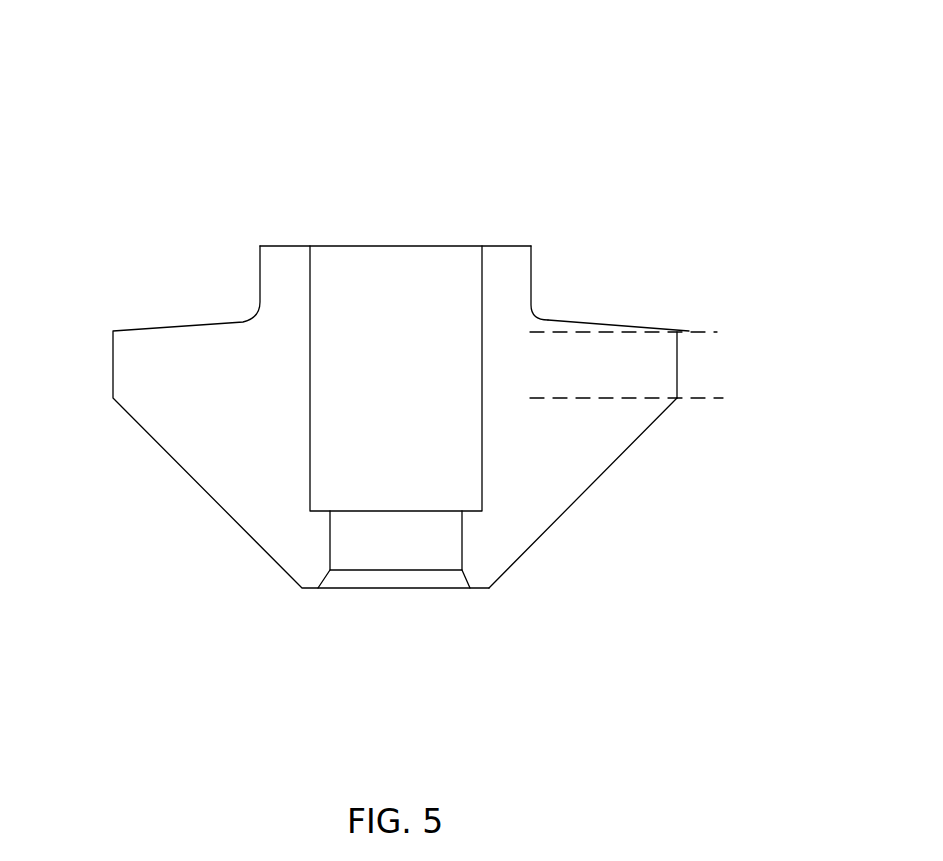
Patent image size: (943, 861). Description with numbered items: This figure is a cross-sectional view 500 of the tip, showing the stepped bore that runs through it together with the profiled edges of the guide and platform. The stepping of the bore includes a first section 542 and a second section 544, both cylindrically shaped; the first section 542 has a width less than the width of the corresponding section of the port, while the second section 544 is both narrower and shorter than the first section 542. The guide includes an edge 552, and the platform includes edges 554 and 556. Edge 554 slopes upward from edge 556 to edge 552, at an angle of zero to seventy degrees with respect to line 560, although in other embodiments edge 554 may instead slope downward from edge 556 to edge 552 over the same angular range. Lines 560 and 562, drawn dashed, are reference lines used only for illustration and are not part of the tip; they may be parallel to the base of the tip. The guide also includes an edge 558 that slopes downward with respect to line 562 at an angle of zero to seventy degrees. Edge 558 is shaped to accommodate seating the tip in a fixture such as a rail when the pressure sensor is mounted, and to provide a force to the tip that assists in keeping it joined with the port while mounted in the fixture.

The nozzle body assembly 500 is at (99, 47).
The first section 542 is at (377, 390).
The second section 544 is at (438, 547).
The edge 552 is at (532, 262).
The edge 554 is at (620, 327).
The edge 556 is at (677, 372).
The edge 558 is at (602, 477).
The line 560 is at (700, 330).
The line 562 is at (700, 398).